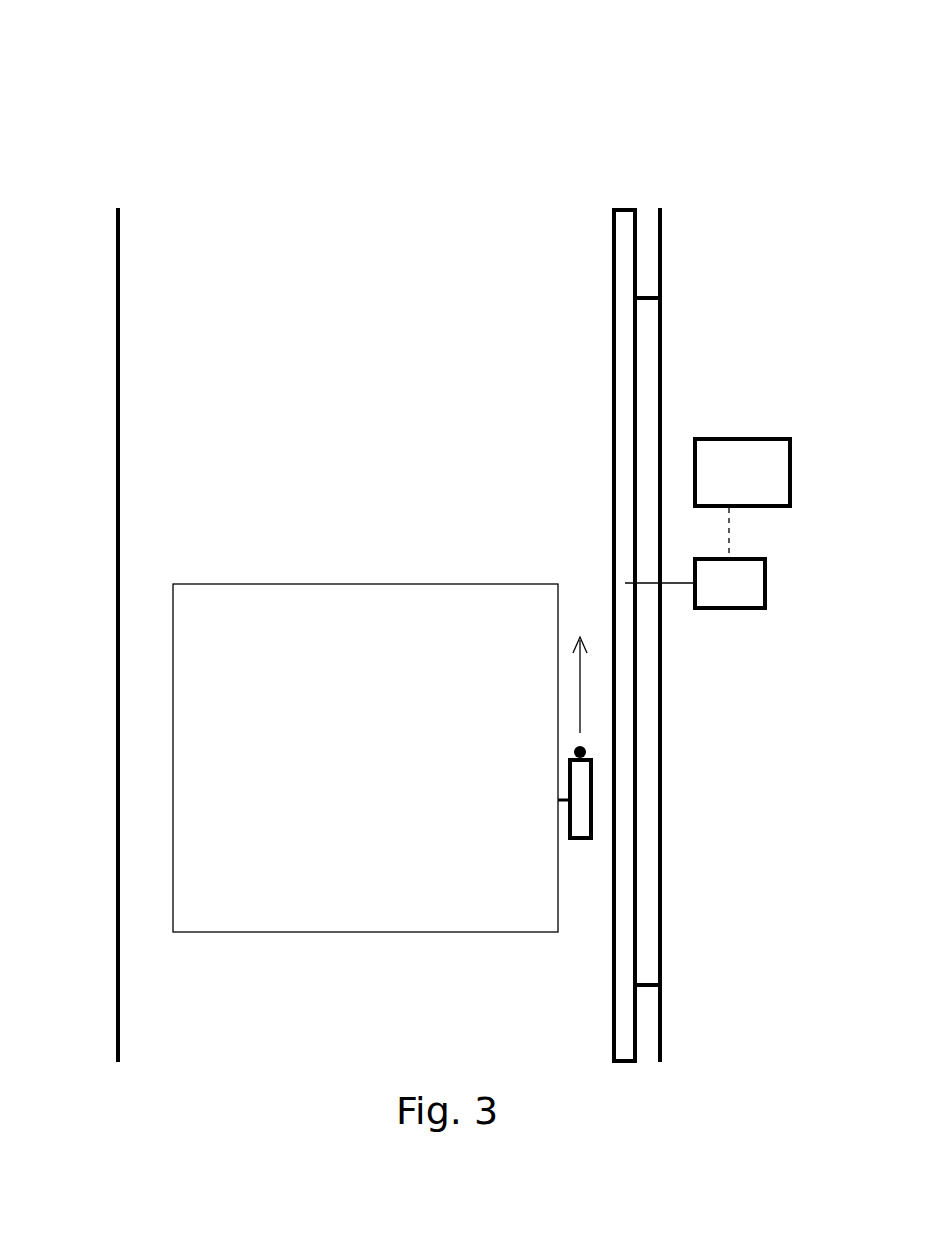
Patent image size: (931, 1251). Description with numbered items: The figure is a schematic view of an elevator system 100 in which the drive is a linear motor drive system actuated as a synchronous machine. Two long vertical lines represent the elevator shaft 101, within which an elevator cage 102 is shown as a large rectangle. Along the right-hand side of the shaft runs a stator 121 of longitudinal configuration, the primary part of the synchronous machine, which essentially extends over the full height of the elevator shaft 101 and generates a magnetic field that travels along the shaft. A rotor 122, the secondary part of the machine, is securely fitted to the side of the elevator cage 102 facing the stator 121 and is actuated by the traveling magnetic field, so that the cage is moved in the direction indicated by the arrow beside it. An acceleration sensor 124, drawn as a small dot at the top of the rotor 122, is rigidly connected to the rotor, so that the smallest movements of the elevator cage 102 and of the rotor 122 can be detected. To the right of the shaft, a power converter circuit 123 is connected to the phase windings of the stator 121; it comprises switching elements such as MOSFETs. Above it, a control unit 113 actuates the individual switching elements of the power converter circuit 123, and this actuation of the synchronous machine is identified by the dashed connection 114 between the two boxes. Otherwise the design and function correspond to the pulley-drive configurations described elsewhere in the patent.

The elevator system 100 is at (136, 70).
The elevator shaft 101 is at (118, 1020).
The elevator cage 102 is at (390, 711).
The control unit 113 is at (767, 489).
The actuation of the synchronous machine 114 is at (732, 535).
The stator 121 is at (610, 523).
The rotor 122 is at (580, 820).
The power converter circuit 123 is at (755, 598).
The acceleration sensor 124 is at (572, 757).